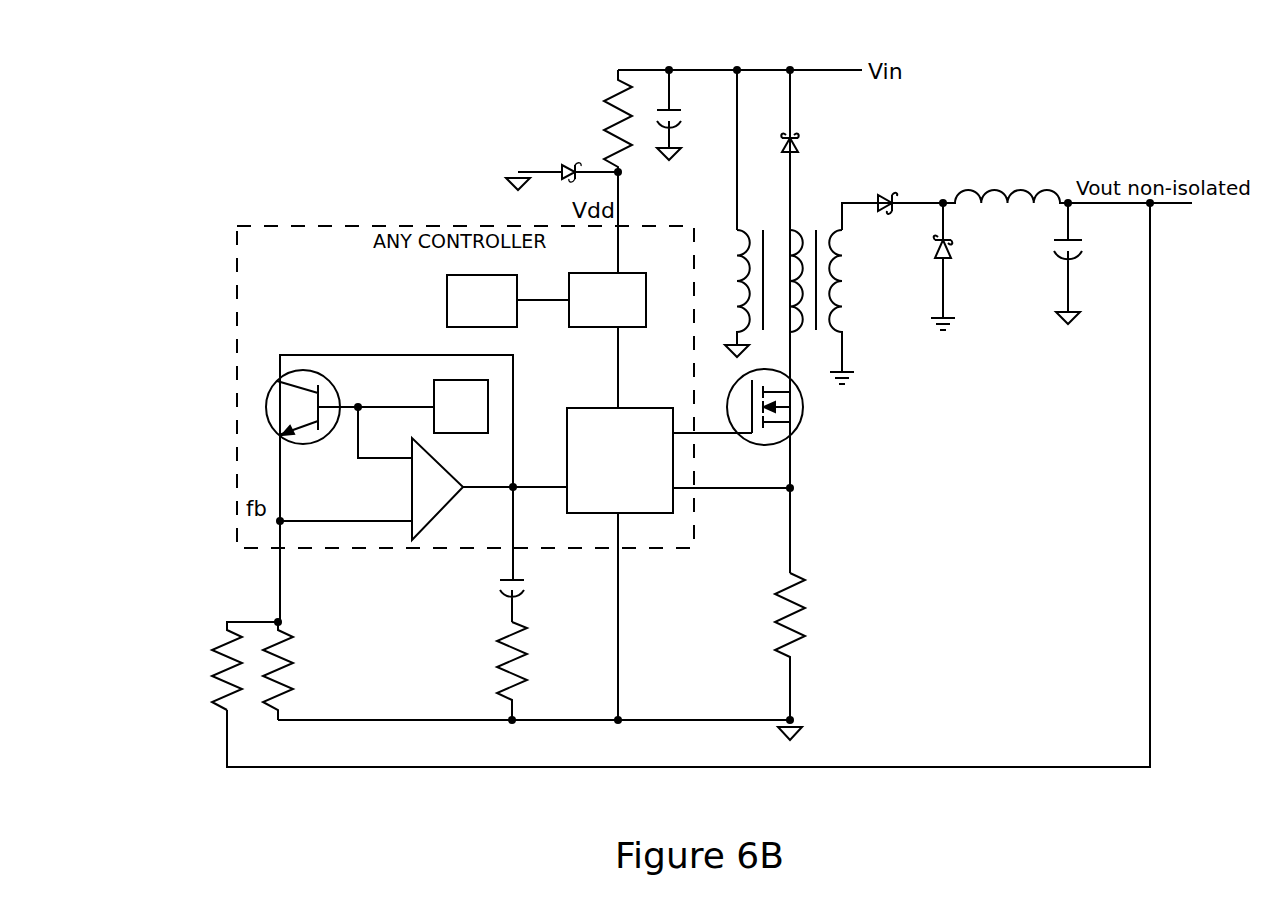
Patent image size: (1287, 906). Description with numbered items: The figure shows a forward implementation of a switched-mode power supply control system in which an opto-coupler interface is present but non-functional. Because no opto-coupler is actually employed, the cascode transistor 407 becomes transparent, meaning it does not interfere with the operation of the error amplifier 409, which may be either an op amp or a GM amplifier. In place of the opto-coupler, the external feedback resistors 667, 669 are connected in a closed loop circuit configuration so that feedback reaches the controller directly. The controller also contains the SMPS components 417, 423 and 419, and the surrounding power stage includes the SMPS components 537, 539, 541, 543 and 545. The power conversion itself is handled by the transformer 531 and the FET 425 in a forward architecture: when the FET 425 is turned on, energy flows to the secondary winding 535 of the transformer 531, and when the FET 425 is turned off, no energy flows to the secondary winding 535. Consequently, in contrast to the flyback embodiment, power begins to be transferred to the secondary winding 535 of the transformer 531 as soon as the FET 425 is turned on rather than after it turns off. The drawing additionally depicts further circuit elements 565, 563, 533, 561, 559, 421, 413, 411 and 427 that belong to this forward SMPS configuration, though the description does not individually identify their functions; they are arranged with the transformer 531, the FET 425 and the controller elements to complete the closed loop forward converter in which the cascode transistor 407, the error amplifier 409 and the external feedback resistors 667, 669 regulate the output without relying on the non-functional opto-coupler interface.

The SMPS component 539 is at (609, 97).
The SMPS component 541 is at (675, 114).
The primary winding connection 565 is at (766, 112).
The SMPS component 537 is at (558, 169).
The auxiliary winding 563 is at (735, 270).
The primary winding 533 is at (795, 250).
The transformer 531 is at (790, 273).
The secondary winding 535 is at (842, 290).
The SMPS component 543 is at (895, 200).
The output inductor 561 is at (1003, 190).
The diode 559 is at (950, 248).
The SMPS component 545 is at (1056, 284).
The SMPS component 417 is at (446, 313).
The SMPS component 419 is at (630, 327).
The cascode transistor 407 is at (267, 392).
The SMPS component 423 is at (433, 390).
The error amplifier 409 is at (430, 512).
The PWM and driver 421 is at (632, 505).
The FET 425 is at (803, 412).
The compensation capacitor Ccomp 413 is at (530, 583).
The compensation resistor Rcomp 411 is at (528, 647).
The sense resistor Rsense 427 is at (802, 622).
The external feedback resistor 667 is at (292, 655).
The external feedback resistor 669 is at (215, 670).